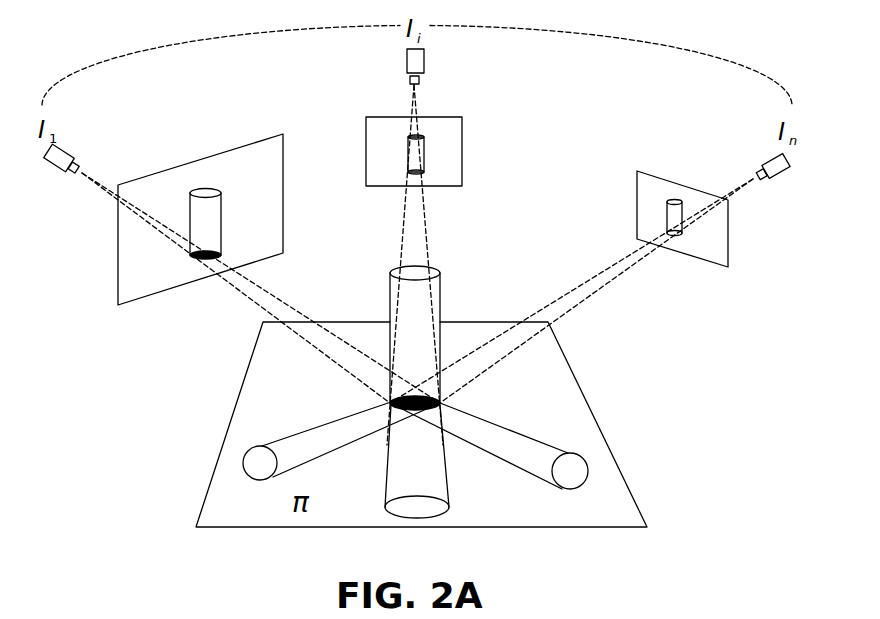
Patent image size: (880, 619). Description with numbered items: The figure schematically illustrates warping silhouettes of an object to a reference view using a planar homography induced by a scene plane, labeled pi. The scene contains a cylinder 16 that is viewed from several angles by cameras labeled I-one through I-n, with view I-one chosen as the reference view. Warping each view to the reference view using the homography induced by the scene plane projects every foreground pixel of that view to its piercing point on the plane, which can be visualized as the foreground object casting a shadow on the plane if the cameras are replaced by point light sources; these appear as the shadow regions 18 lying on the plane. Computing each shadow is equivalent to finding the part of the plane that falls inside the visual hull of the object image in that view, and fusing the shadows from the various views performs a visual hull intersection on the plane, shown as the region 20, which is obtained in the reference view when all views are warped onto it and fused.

The cylinder 16 is at (436, 285).
The shadow regions 18 is at (314, 437).
The region 20 is at (191, 258).